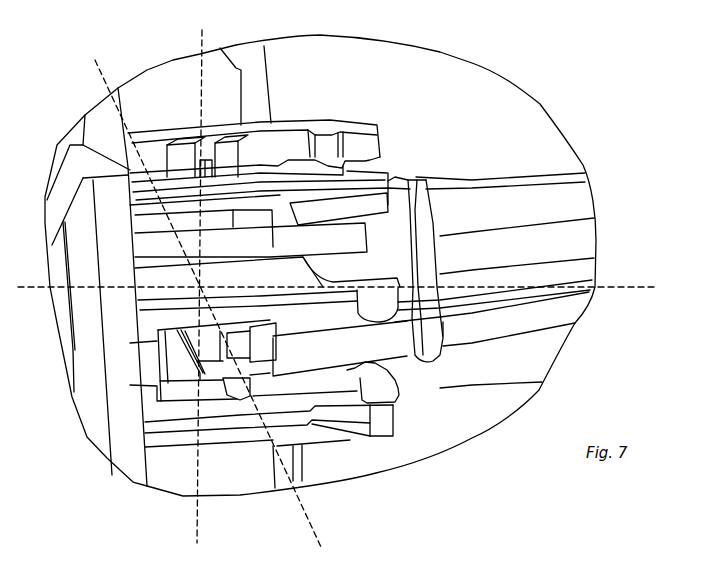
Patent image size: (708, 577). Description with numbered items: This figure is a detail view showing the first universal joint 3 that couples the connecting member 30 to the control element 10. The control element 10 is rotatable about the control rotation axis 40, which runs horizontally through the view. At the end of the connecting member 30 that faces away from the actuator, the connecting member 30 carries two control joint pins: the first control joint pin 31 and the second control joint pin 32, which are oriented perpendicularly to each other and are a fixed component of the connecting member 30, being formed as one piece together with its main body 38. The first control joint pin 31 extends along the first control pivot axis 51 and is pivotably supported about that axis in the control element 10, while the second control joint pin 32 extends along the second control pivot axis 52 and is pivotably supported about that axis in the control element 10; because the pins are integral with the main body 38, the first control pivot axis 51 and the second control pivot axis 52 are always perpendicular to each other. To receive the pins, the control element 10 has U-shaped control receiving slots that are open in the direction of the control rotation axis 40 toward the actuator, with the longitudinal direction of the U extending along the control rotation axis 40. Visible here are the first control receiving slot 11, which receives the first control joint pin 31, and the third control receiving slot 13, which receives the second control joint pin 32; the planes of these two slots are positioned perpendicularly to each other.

The first universal joint 3 is at (318, 96).
The control element 10 is at (333, 402).
The first control receiving slot 11 is at (368, 352).
The third control receiving slot 13 is at (383, 163).
The connecting member 30 is at (590, 196).
The first control joint pin 31 is at (237, 392).
The second control joint pin 32 is at (200, 147).
The main body 38 is at (529, 204).
The control rotation axis 40 is at (615, 288).
The first control pivot axis 51 is at (316, 532).
The second control pivot axis 52 is at (196, 533).